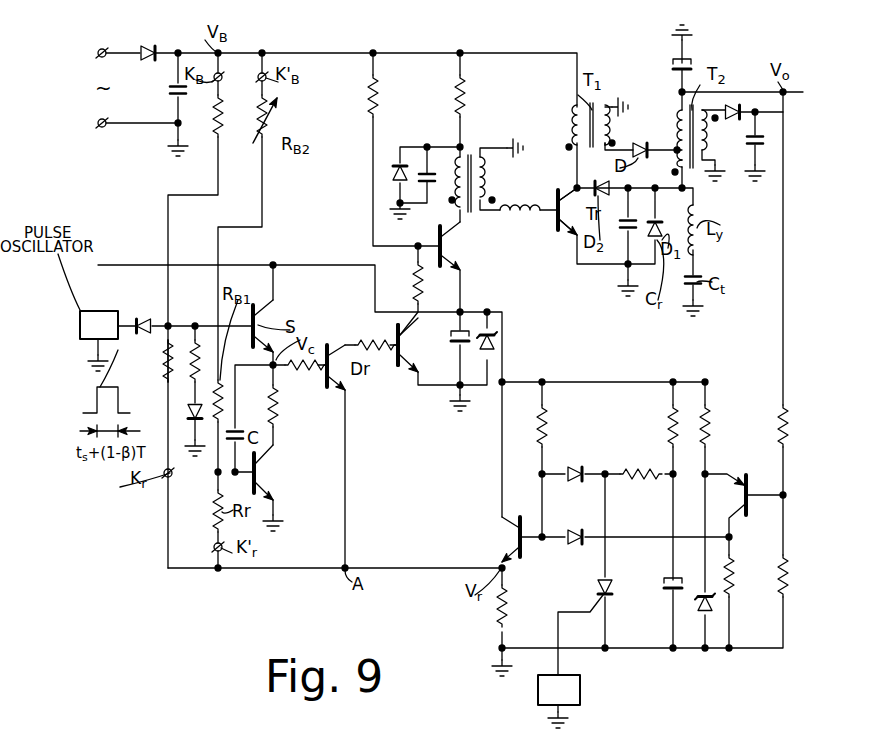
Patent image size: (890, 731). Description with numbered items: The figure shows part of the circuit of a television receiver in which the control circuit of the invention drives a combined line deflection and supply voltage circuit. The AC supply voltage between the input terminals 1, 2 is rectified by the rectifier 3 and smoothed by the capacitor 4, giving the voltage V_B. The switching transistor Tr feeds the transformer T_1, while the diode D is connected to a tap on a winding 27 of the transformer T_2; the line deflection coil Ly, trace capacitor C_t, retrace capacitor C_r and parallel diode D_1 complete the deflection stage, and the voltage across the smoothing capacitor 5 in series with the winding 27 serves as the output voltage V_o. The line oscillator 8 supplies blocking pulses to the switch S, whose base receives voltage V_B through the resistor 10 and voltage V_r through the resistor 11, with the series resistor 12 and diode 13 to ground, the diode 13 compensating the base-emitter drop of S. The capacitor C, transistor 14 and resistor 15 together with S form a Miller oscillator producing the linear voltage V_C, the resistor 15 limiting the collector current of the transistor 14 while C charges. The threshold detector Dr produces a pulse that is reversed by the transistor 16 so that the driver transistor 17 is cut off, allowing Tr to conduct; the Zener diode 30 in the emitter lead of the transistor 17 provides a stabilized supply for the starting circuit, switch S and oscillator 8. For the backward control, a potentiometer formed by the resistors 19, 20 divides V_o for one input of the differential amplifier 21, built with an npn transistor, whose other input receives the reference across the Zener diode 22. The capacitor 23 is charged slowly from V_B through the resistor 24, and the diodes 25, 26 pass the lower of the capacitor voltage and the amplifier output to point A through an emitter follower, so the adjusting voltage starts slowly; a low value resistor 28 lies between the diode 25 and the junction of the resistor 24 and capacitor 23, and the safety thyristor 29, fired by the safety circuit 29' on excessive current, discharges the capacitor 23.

The input terminal 1 is at (104, 50).
The input terminal 2 is at (104, 127).
The rectifier 3 is at (150, 46).
The capacitor 4 is at (170, 90).
The smoothing capacitor 5 is at (674, 67).
The line oscillator 8 is at (112, 315).
The resistor 10 is at (224, 120).
The resistor 11 is at (165, 352).
The resistor 12 is at (186, 358).
The diode 13 is at (186, 412).
The transistor 14 is at (260, 472).
The resistor 15 is at (287, 402).
The transistor 16 is at (397, 362).
The driver transistor 17 is at (446, 248).
The resistor 19 is at (779, 583).
The resistor 20 is at (779, 425).
The differential amplifier 21 is at (744, 494).
The Zener diode 22 is at (700, 606).
The capacitor 23 is at (665, 588).
The resistor 24 is at (666, 423).
The diode 25 is at (572, 466).
The diode 26 is at (573, 530).
The winding 27 is at (678, 123).
The low value resistor 28 is at (640, 468).
The safety thyristor 29 is at (580, 590).
The safety circuit 29' is at (580, 692).
The Zener diode 30 is at (494, 342).